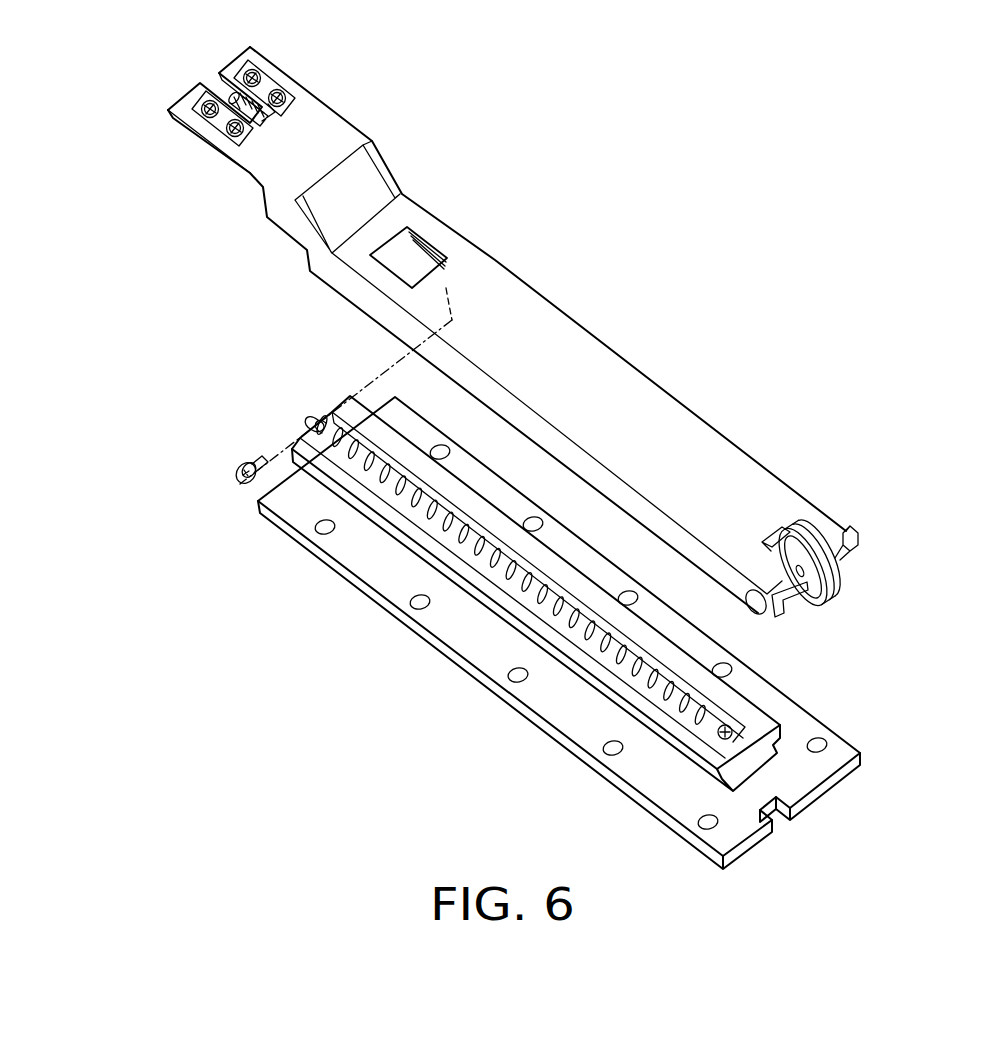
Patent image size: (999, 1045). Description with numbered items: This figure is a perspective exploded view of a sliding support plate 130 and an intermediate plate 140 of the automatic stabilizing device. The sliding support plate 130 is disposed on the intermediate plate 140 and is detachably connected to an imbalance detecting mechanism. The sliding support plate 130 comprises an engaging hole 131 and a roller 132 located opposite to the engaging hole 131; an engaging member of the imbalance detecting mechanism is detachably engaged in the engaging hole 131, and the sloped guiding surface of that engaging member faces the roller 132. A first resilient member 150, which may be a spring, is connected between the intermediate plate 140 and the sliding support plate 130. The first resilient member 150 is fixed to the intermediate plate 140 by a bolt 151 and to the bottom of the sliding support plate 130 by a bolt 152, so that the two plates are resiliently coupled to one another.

The sliding support plate 130 is at (575, 360).
The engaging hole 131 is at (260, 112).
The roller 132 is at (842, 577).
The intermediate plate 140 is at (383, 567).
The first resilient member 150 is at (505, 572).
The bolt 151 is at (742, 720).
The bolt 152 is at (242, 486).